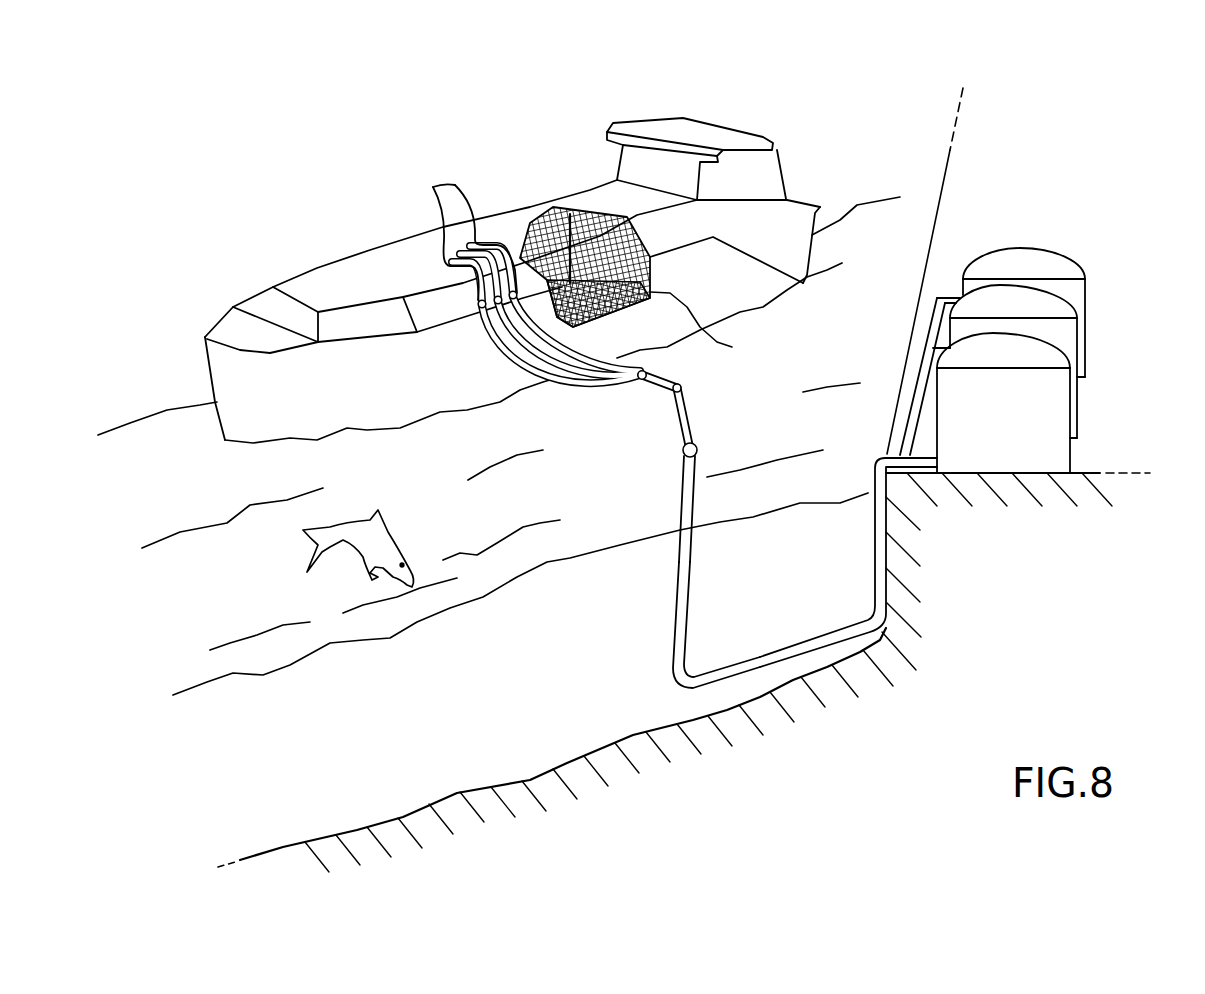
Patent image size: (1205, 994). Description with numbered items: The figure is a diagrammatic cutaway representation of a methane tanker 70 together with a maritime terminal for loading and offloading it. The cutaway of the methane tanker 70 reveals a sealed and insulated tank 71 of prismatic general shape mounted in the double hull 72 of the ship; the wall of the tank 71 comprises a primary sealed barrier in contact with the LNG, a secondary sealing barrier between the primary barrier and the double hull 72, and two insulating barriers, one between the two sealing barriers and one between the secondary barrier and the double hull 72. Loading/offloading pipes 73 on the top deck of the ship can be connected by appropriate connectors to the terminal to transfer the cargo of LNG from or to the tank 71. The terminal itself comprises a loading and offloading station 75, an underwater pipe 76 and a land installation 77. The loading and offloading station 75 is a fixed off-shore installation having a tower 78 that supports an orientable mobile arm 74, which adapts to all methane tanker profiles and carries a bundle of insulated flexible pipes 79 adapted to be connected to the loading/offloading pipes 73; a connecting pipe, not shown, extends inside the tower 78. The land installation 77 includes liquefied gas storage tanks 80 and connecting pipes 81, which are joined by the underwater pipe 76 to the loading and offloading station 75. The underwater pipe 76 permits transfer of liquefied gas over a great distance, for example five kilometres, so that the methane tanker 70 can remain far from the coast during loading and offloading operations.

The methane tanker 70 is at (740, 130).
The sealed and insulated tank 71 is at (567, 247).
The double hull 72 is at (704, 327).
The loading/offloading pipes 73 is at (522, 276).
The mobile arm 74 is at (689, 409).
The loading and offloading station 75 is at (686, 514).
The underwater pipe 76 is at (782, 644).
The land installation 77 is at (1017, 234).
The tower 78 is at (677, 556).
The bundle of insulated flexible pipes 79 is at (612, 396).
The liquefied gas storage tanks 80 is at (967, 262).
The connecting pipes 81 is at (907, 397).